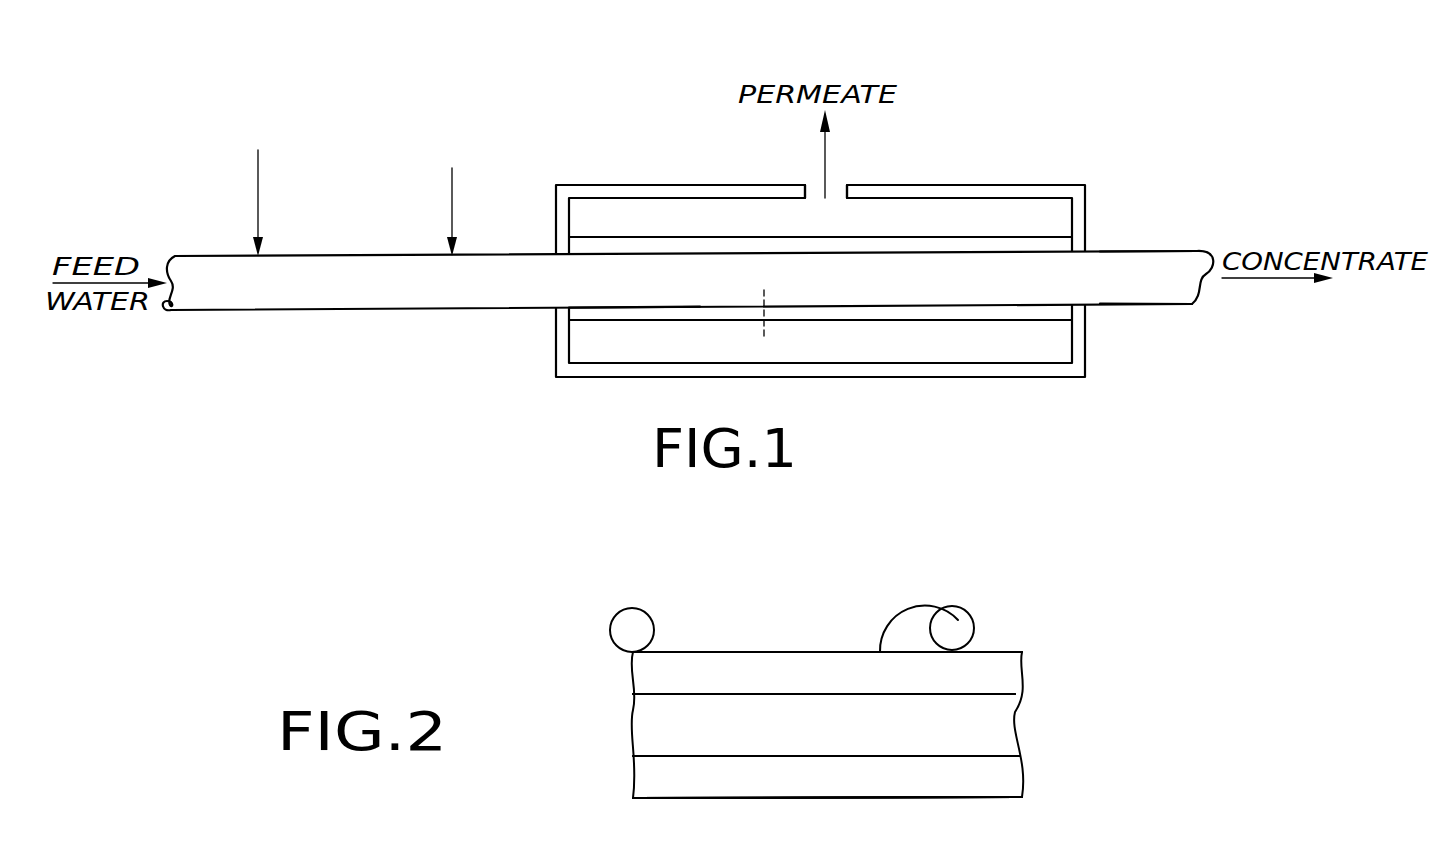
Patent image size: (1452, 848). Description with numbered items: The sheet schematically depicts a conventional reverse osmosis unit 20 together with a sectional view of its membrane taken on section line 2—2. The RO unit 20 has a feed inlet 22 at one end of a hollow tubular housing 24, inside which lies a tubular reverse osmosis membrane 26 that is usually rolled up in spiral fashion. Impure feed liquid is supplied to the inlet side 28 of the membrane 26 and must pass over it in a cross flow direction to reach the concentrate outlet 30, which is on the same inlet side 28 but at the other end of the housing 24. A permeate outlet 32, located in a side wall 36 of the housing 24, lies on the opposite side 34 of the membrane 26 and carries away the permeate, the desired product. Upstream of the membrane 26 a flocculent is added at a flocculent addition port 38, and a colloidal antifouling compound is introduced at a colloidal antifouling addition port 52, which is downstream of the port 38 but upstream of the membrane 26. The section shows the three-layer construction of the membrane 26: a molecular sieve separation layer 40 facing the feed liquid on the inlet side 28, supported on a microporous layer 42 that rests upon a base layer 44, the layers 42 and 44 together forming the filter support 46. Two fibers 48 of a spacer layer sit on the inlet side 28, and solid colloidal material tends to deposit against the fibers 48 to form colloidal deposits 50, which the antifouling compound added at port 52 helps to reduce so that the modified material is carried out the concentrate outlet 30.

In FIG. 1, the section line 2— 2 is at (764, 290).
In FIG. 1, the reverse osmosis unit 20 is at (1068, 159).
In FIG. 1, the feed inlet 22 is at (260, 310).
In FIG. 1, the hollow tubular housing 24 is at (619, 379).
In FIG. 1, the reverse osmosis membrane 26 is at (908, 312).
In FIG. 2, the reverse osmosis membrane 26 is at (633, 652).
In FIG. 1, the inlet side 28 is at (635, 306).
In FIG. 2, the inlet side 28 is at (713, 652).
In FIG. 1, the concentrate outlet 30 is at (1157, 298).
In FIG. 1, the permeate outlet 32 is at (835, 187).
In FIG. 1, the opposite side 34 is at (630, 323).
In FIG. 2, the opposite side 34 is at (765, 797).
In FIG. 1, the side wall 36 is at (742, 190).
In FIG. 1, the flocculent addition port 38 is at (258, 257).
In FIG. 2, the molecular sieve separation layer 40 is at (1000, 673).
In FIG. 2, the microporous layer 42 is at (1008, 718).
In FIG. 2, the base layer 44 is at (1010, 778).
In FIG. 2, the filter support 46 is at (633, 695).
In FIG. 2, the fibers 48 is at (620, 623).
In FIG. 2, the colloidal deposits 50 is at (910, 628).
In FIG. 1, the colloidal antifouling addition port 52 is at (452, 257).